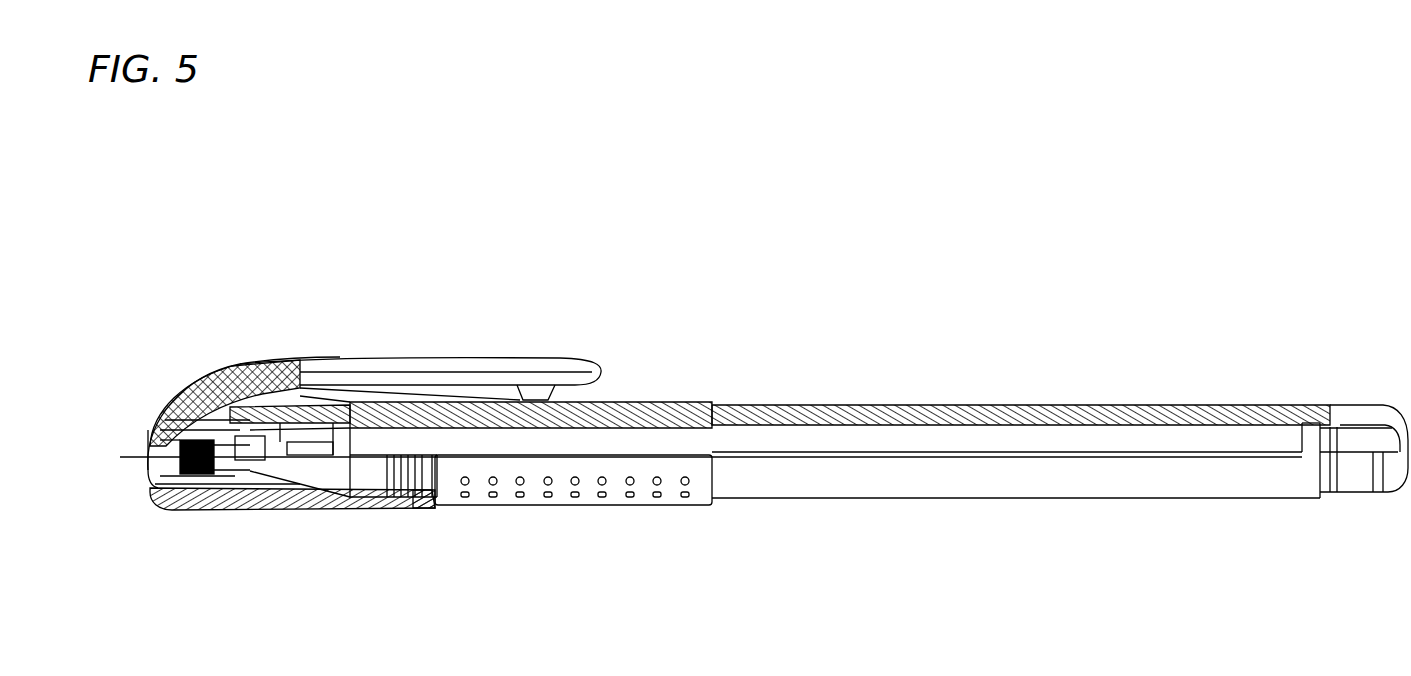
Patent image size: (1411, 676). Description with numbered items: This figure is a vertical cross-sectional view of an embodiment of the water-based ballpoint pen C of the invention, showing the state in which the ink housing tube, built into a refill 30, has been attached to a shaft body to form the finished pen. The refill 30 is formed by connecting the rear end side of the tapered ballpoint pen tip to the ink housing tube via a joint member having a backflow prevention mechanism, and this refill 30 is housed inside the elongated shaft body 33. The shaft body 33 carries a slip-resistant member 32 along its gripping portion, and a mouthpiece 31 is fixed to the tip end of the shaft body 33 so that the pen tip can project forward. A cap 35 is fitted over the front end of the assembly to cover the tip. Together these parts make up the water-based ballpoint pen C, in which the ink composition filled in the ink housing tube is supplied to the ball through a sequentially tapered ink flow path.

The refill 30 is at (777, 404).
The mouthpiece 31 is at (328, 472).
The slip-resistant member 32 is at (615, 493).
The shaft body 33 is at (910, 480).
The cap 35 is at (381, 360).
The water-based ballpoint pen C is at (864, 389).